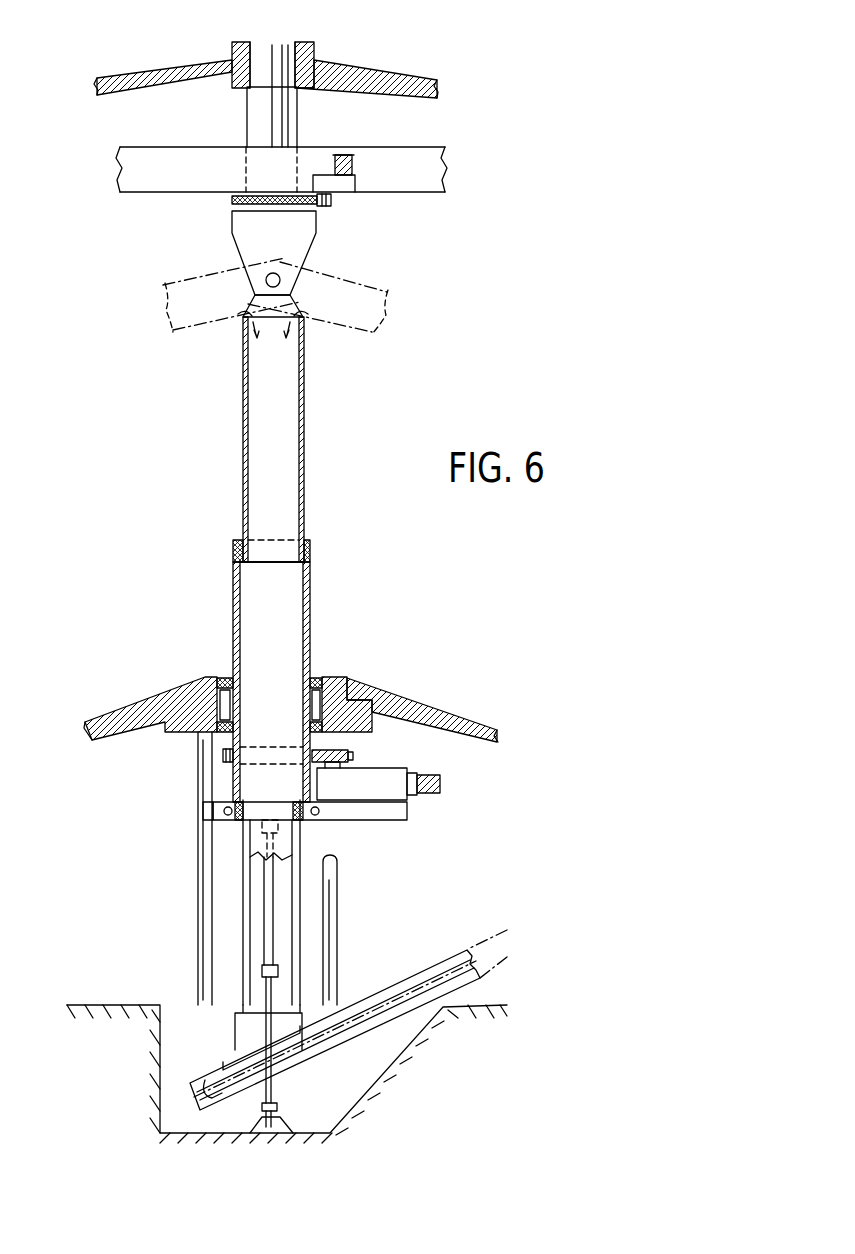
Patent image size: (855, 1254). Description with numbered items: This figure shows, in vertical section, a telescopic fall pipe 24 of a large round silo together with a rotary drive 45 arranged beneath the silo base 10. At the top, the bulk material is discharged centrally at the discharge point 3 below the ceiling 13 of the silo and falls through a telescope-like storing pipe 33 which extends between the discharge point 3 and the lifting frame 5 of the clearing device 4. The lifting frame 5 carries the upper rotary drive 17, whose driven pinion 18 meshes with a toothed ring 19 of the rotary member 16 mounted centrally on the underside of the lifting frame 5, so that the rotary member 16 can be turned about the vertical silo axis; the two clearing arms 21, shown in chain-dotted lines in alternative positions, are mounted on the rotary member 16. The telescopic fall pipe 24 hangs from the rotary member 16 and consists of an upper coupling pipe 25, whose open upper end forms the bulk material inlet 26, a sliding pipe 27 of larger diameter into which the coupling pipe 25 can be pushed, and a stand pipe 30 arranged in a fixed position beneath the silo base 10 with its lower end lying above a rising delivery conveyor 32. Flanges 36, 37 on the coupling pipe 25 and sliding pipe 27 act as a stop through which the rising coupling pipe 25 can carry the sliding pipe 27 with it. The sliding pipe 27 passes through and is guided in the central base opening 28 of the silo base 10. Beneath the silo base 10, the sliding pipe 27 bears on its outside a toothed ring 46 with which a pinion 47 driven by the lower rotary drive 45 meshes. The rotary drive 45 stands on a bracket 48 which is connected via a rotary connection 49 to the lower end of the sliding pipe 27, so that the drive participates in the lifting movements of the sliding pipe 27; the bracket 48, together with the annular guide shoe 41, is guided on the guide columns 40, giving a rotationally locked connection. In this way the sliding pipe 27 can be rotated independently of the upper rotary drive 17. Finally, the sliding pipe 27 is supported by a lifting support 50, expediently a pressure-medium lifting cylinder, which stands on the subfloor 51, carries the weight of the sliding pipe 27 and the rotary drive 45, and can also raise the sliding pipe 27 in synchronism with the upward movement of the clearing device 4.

The discharge point 3 is at (260, 42).
The ceiling of the silo 13 is at (420, 84).
The telescope-like storing pipe 33 is at (260, 111).
The rotary drive 17 is at (343, 155).
The toothed ring 19 is at (232, 200).
The driven pinion 18 is at (331, 200).
The clearing device 4 is at (130, 208).
The lifting frame 5 is at (428, 185).
The rotary member 16 is at (318, 232).
The clearing arms 21 is at (197, 313).
The bulk material inlet 26 is at (275, 320).
The telescopic fall pipe 24 is at (220, 435).
The coupling pipe 25 is at (305, 462).
The flange 36 is at (240, 540).
The flange 37 is at (235, 558).
The sliding pipe 27 is at (310, 618).
The central base opening 28 is at (345, 680).
The silo base 10 is at (455, 710).
The toothed ring 46 is at (223, 757).
The pinion 47 is at (353, 757).
The rotary drive 45 is at (400, 773).
The annular guide shoe 41 is at (205, 812).
The rotary connection 49 is at (223, 820).
The bracket 48 is at (385, 820).
The stand pipe 30 is at (250, 910).
The guide columns 40 is at (207, 950).
The lifting supports 50 is at (262, 968).
The rising delivery conveyor 32 is at (450, 963).
The subfloor 51 is at (178, 1130).